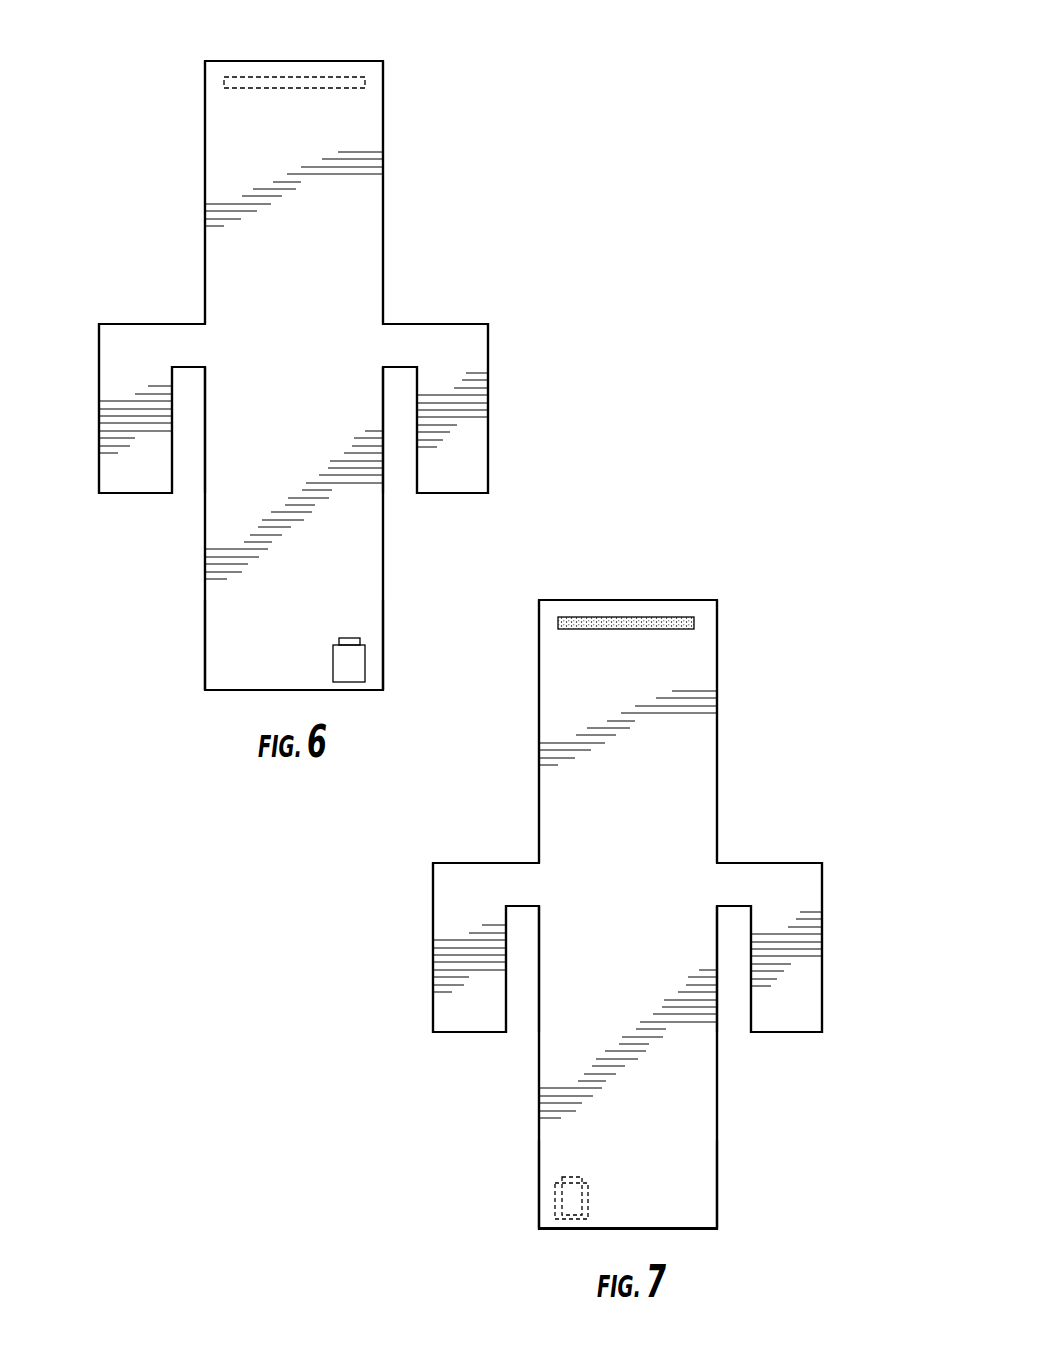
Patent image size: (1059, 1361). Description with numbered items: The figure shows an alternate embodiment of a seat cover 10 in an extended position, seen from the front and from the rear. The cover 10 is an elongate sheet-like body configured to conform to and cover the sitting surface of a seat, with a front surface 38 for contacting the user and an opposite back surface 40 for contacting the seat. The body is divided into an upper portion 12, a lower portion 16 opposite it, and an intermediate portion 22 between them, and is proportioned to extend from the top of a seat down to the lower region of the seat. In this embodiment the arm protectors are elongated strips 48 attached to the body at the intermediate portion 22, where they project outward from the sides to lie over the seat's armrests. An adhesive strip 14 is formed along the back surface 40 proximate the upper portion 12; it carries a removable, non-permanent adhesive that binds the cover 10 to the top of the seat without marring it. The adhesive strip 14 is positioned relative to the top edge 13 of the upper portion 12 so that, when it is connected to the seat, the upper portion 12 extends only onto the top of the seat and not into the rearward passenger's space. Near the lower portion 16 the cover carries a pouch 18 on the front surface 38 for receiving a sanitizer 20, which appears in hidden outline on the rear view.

In FIG. 6, the seat cover 10 is at (136, 112).
In FIG. 7, the seat cover 10 is at (816, 636).
In FIG. 6, the upper portion 12 is at (365, 103).
In FIG. 7, the upper portion 12 is at (698, 642).
In FIG. 6, the top edge 13 is at (330, 61).
In FIG. 7, the top edge 13 is at (600, 598).
In FIG. 7, the adhesive strip 14 is at (632, 625).
In FIG. 6, the lower portion 16 is at (237, 654).
In FIG. 7, the lower portion 16 is at (685, 1193).
In FIG. 6, the pouch 18 is at (347, 663).
In FIG. 7, the pouch 18 is at (557, 1204).
In FIG. 6, the sanitizer 20 is at (348, 638).
In FIG. 7, the sanitizer 20 is at (568, 1177).
In FIG. 6, the intermediate portion 22 is at (283, 376).
In FIG. 6, the front surface 38 is at (247, 483).
In FIG. 7, the back surface 40 is at (648, 824).
In FIG. 6, the elongated strips 48 is at (123, 413).
In FIG. 7, the elongated strips 48 is at (797, 937).